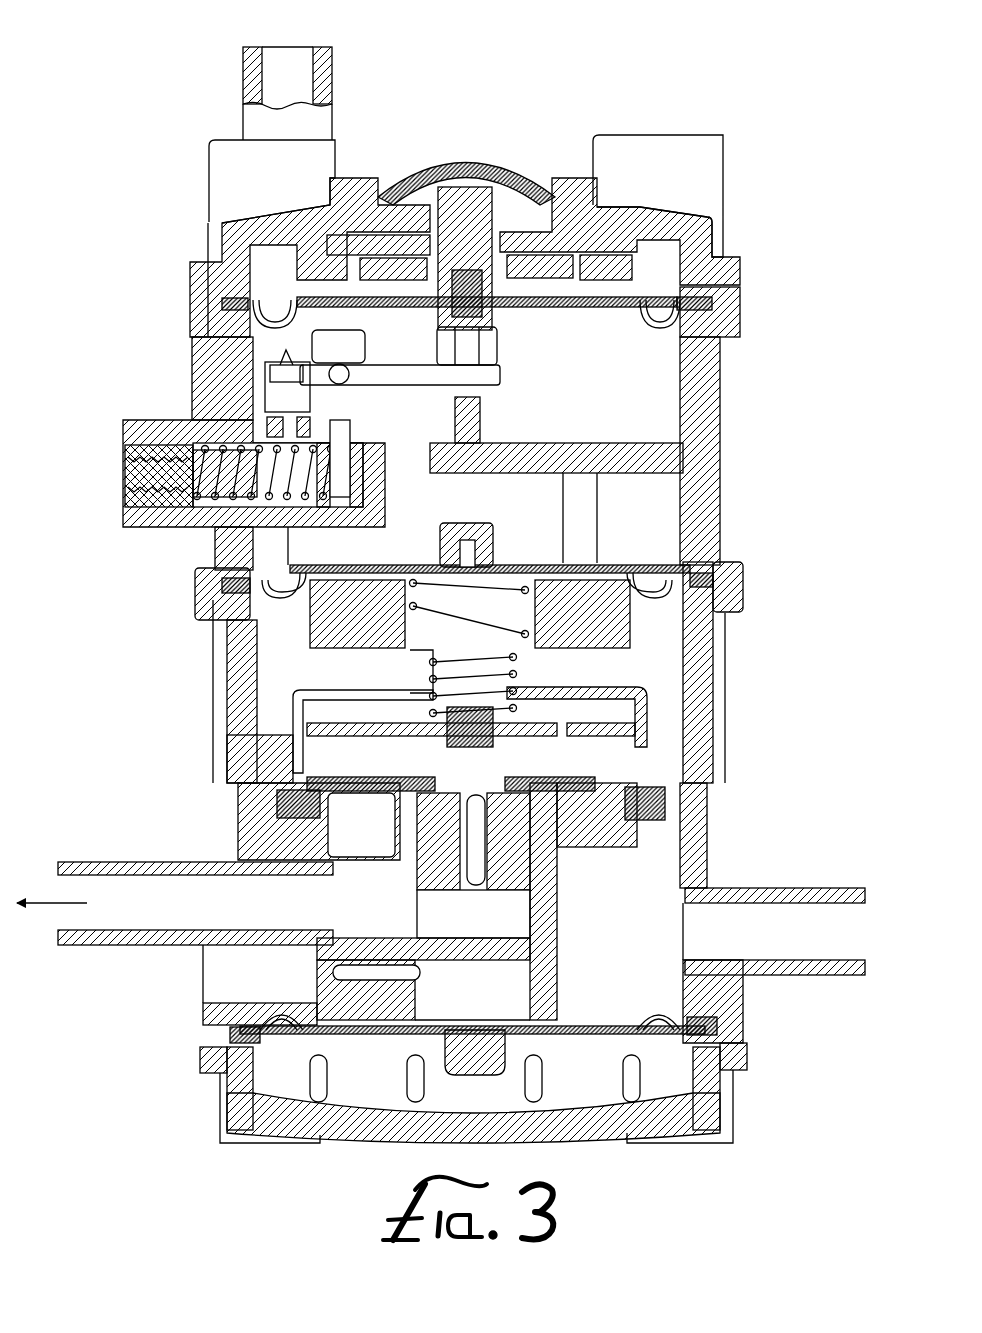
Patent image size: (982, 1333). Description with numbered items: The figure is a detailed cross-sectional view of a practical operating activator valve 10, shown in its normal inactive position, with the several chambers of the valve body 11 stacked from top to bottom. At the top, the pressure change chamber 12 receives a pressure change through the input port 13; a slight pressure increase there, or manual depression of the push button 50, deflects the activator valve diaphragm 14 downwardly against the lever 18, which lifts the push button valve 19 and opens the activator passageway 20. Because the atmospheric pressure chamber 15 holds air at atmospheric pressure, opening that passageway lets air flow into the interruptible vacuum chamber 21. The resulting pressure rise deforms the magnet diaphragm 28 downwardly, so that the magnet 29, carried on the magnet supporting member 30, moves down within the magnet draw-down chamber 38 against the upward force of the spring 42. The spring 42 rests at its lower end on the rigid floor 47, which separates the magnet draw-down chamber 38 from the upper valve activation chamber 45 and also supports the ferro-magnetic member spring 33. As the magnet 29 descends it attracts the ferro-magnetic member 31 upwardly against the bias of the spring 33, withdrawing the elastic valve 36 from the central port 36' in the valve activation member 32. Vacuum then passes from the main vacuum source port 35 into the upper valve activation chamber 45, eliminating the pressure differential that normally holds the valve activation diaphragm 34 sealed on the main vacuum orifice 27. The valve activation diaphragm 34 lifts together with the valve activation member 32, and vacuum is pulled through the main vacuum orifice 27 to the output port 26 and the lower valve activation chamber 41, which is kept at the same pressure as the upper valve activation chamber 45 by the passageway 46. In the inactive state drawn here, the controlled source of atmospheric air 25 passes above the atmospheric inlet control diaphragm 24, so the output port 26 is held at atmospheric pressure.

The activator valve 10 is at (185, 32).
The valve body 11 is at (725, 362).
The pressure change chamber 12 is at (665, 265).
The input port 13 is at (332, 62).
The activator valve diaphragm 14 is at (300, 298).
The atmospheric pressure chamber 15 is at (265, 342).
The lever 18 is at (495, 385).
The push button valve 19 is at (320, 395).
The activator passageway 20 is at (285, 410).
The interruptible vacuum chamber 21 is at (680, 505).
The atmospheric inlet control diaphragm 24 is at (440, 1035).
The controlled source of atmospheric air 25 is at (225, 1000).
The output port 26 is at (815, 890).
The main vacuum orifice 27 is at (505, 790).
The magnet diaphragm 28 is at (632, 570).
The magnet 29 is at (335, 628).
The magnet supporting member 30 is at (527, 563).
The ferro-magnetic member 31 is at (345, 700).
The valve activation member 32 is at (362, 855).
The ferro-magnetic member spring 33 is at (372, 712).
The valve activation diaphragm 34 is at (445, 800).
The main vacuum source port 35 is at (58, 882).
The elastic valve 36 is at (611, 743).
The central port 36' is at (539, 872).
The magnet draw-down chamber 38 is at (660, 635).
The lower valve activation chamber 41 is at (650, 895).
The spring 42 is at (517, 632).
The upper valve activation chamber 45 is at (620, 708).
The passageway 46 is at (558, 722).
The rigid floor 47 is at (608, 688).
The push button 50 is at (497, 168).